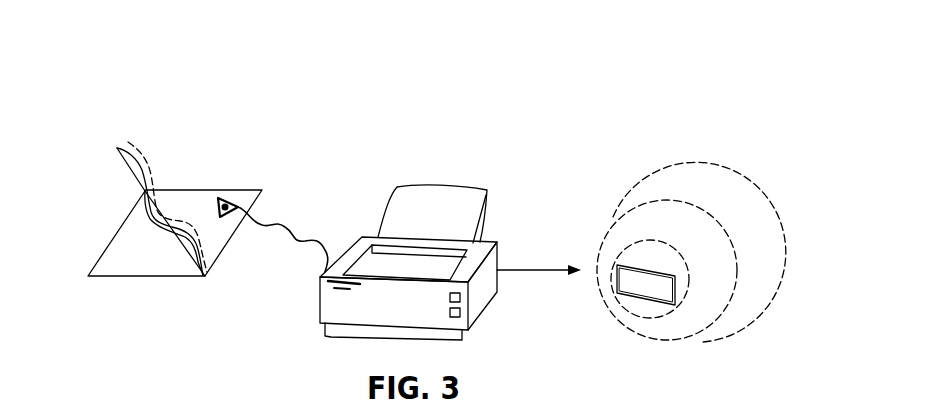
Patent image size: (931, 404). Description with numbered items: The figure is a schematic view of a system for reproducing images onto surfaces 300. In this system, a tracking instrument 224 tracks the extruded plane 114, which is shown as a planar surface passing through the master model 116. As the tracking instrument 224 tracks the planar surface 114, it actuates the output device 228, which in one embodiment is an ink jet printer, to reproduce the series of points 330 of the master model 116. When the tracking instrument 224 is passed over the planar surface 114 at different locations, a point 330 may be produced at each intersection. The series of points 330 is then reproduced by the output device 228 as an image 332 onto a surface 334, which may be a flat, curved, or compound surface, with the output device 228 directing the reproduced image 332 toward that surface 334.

The extruded plane 114 is at (136, 170).
The master model 116 is at (137, 267).
The series of points 330 is at (149, 151).
The tracking instrument 224 is at (224, 217).
The output device 228 is at (443, 175).
The system for reproducing images onto surfaces 300 is at (582, 82).
The image 332 is at (632, 266).
The surface 334 is at (677, 160).